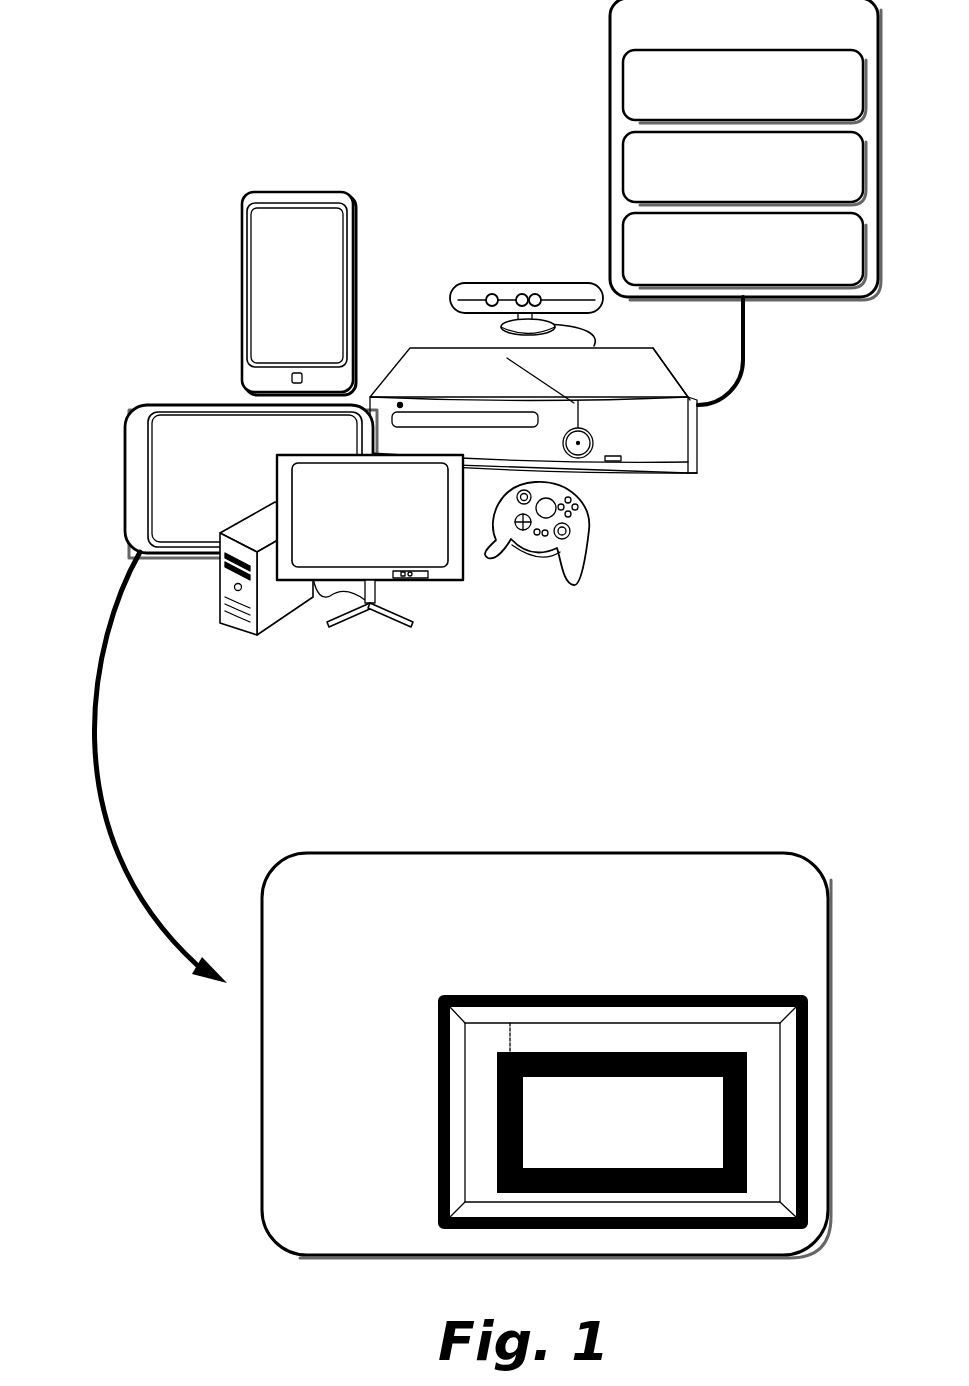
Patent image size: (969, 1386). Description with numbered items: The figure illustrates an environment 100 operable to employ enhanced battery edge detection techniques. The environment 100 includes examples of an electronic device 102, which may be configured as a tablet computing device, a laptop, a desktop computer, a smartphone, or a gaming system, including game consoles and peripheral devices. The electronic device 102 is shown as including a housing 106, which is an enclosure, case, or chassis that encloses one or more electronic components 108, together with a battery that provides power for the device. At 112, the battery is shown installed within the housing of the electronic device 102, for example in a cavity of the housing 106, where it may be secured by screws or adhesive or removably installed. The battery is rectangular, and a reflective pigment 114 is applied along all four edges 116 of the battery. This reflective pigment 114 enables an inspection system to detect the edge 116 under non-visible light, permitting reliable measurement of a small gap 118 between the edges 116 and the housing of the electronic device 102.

The environment 100 is at (186, 58).
The electronic device 102 is at (843, 31).
The housing 106 is at (726, 108).
The electronic components 108 is at (839, 190).
The battery installed within housing 112 is at (578, 820).
The reflective pigment 114 is at (567, 1052).
The edge 116 is at (662, 1035).
The gap 118 is at (522, 1028).